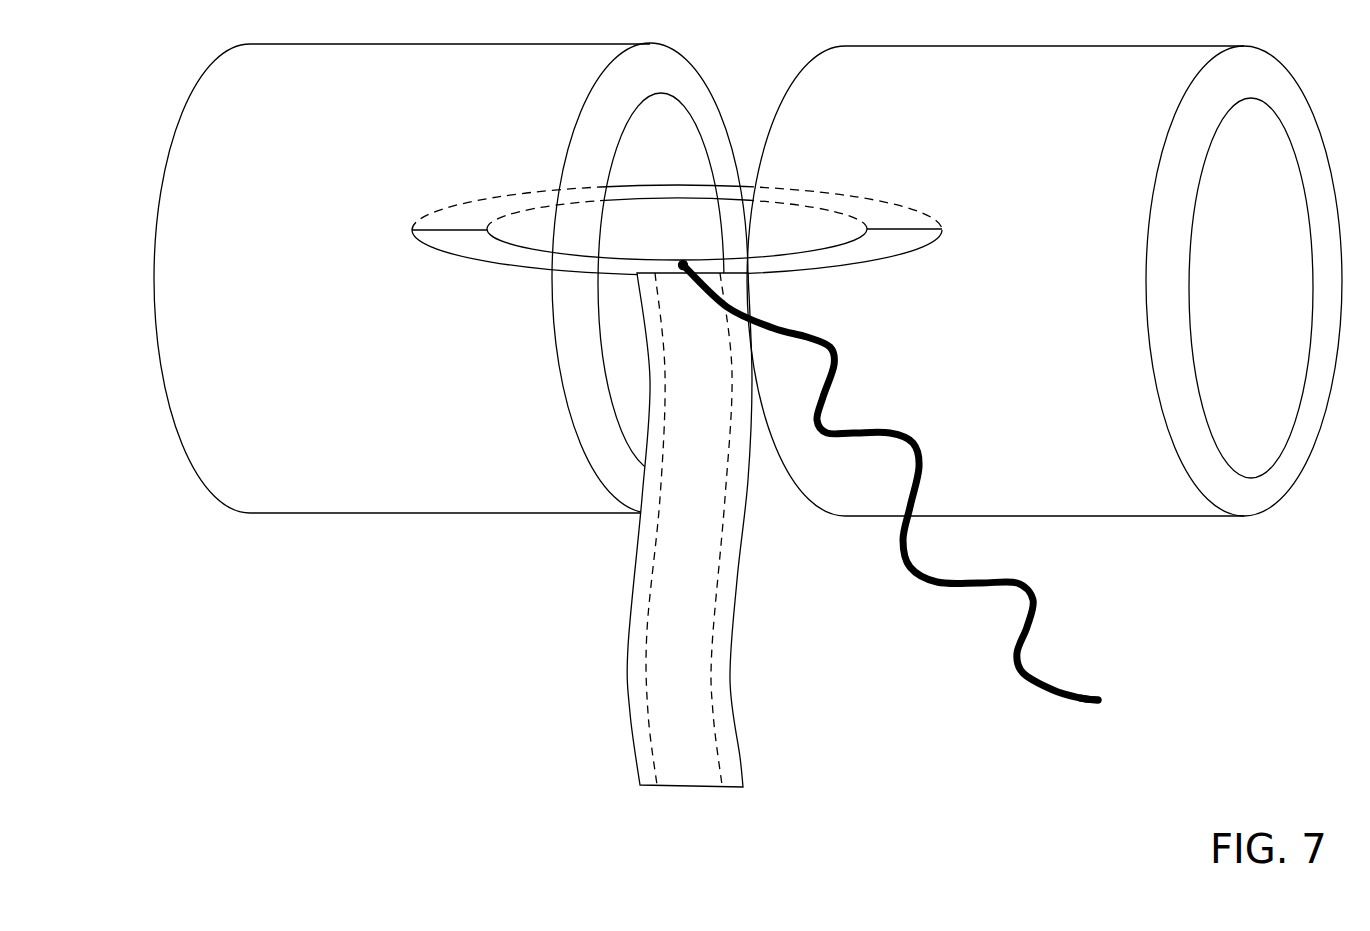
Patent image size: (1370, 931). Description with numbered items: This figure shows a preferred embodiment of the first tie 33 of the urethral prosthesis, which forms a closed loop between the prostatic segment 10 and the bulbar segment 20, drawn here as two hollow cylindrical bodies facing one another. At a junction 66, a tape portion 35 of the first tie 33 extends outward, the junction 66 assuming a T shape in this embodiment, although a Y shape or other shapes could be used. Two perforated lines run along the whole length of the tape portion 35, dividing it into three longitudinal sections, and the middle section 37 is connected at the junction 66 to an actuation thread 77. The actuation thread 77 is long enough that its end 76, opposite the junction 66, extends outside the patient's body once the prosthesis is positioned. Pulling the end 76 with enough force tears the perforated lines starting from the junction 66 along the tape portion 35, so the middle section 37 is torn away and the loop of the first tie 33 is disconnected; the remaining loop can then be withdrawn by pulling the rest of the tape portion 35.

The prostatic segment 10 is at (313, 449).
The bulbar segment 20 is at (1081, 449).
The first tie 33 is at (683, 183).
The tape portion 35 is at (672, 530).
The middle section 37 is at (697, 648).
The junction 66 is at (683, 263).
The actuation thread 77 is at (902, 475).
The end 76 is at (1101, 700).